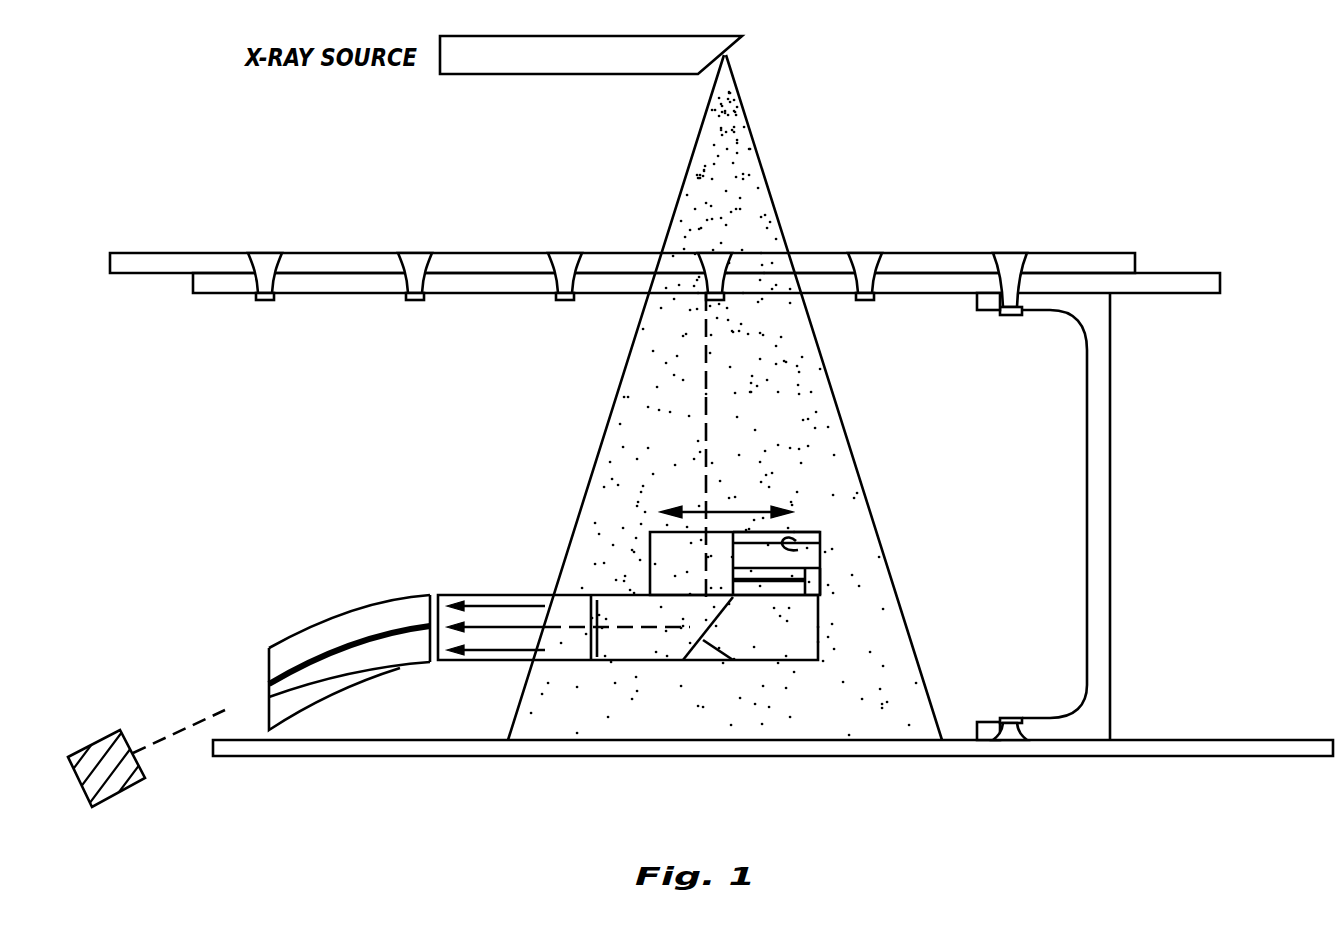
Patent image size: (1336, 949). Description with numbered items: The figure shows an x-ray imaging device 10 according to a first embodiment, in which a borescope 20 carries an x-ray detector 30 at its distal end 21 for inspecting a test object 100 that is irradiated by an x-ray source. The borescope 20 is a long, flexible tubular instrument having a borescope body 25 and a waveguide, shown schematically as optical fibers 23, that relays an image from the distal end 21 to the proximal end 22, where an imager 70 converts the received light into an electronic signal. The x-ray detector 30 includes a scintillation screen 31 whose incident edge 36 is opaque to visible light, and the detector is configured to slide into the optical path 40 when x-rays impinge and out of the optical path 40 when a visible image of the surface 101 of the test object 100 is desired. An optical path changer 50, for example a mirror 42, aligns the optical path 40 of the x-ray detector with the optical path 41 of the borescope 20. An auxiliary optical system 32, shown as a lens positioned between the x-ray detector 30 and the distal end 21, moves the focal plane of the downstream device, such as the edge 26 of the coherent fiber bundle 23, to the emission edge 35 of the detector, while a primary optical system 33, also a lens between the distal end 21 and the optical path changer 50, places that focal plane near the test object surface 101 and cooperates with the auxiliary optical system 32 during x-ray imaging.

The x-ray imaging device 10 is at (385, 551).
The borescope 20 is at (305, 648).
The distal end 21 is at (423, 648).
The proximal end 22 is at (297, 693).
The optical fibers 23 is at (332, 647).
The borescope body 25 is at (365, 660).
The edge of coherent fiber bundle 26 is at (425, 622).
The x-ray detector 30 is at (828, 520).
The scintillation screen 31 is at (805, 540).
The auxiliary optical system 32 is at (817, 572).
The primary optical system 33 is at (590, 660).
The emission edge 35 is at (808, 556).
The incident edge 36 is at (805, 533).
The optical path of x-ray detector 40 is at (707, 470).
The optical path of borescope 41 is at (627, 627).
The mirror 42 is at (700, 627).
The optical path changer 50 is at (703, 640).
The imager 70 is at (87, 782).
The test object 100 is at (1160, 283).
The test object surface 101 is at (683, 295).